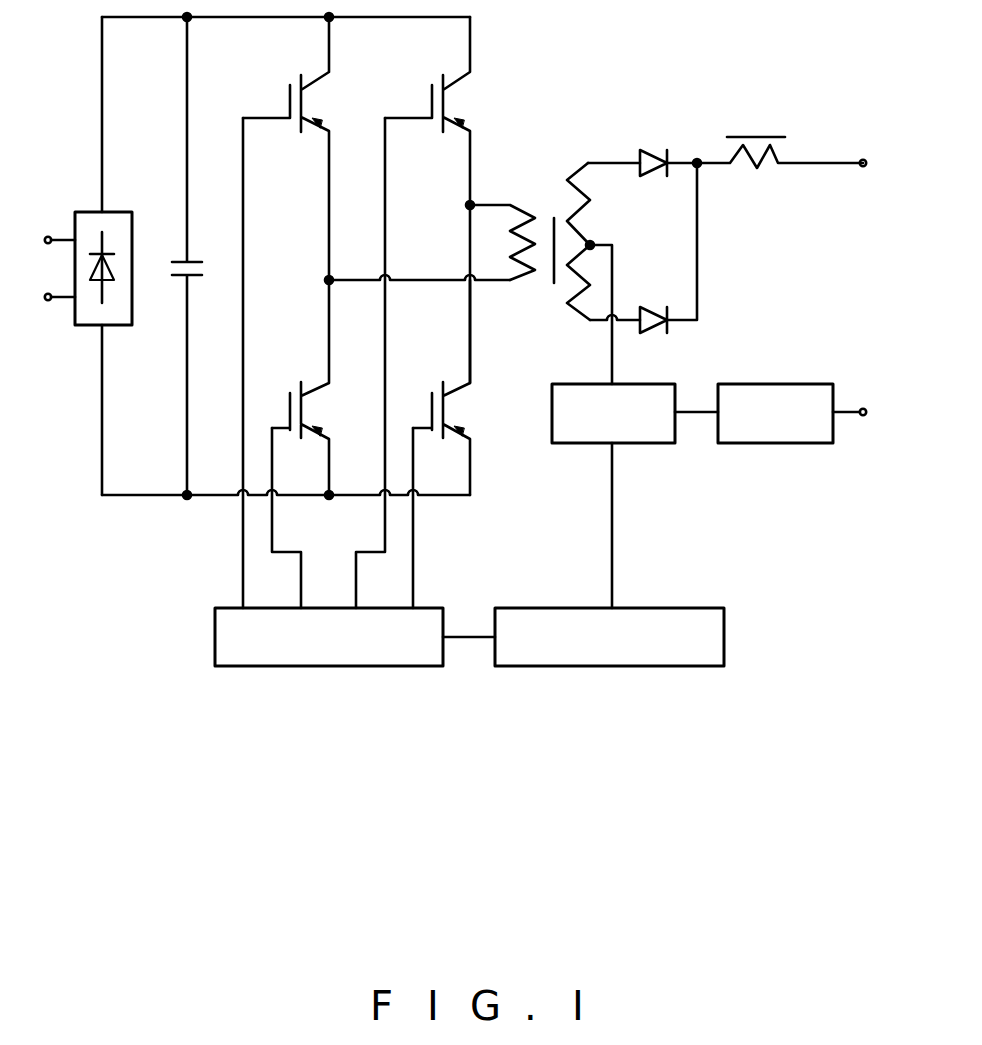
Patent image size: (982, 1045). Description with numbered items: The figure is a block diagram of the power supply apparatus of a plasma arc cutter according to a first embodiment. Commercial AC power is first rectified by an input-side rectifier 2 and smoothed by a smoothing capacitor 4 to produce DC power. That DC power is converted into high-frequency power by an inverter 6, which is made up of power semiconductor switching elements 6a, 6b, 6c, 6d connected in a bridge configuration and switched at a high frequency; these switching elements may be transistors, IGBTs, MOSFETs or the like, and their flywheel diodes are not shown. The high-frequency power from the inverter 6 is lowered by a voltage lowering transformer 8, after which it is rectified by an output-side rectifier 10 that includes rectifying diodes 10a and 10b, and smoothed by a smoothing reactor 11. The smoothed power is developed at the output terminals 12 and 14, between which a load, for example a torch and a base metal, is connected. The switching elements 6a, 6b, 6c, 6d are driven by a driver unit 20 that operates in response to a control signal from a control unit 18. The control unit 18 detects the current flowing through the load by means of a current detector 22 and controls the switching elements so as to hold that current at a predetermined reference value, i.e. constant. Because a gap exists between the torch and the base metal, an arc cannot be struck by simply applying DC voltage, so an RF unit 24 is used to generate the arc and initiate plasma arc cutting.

The input-side rectifier 2 is at (90, 314).
The smoothing capacitor 4 is at (172, 264).
The inverter 6 is at (376, 312).
The power semiconductor switching element 6a is at (286, 312).
The power semiconductor switching element 6b is at (413, 312).
The power semiconductor switching element 6c is at (299, 444).
The power semiconductor switching element 6d is at (441, 444).
The voltage lowering transformer 8 is at (541, 260).
The output-side rectifier 10 is at (644, 217).
The rectifying diode 10a is at (652, 157).
The rectifying diode 10b is at (650, 313).
The smoothing reactor 11 is at (772, 168).
The output terminal 12 is at (866, 167).
The output terminal 14 is at (866, 412).
The control unit 18 is at (595, 659).
The driver unit 20 is at (330, 659).
The current detector 22 is at (637, 444).
The RF unit 24 is at (786, 444).